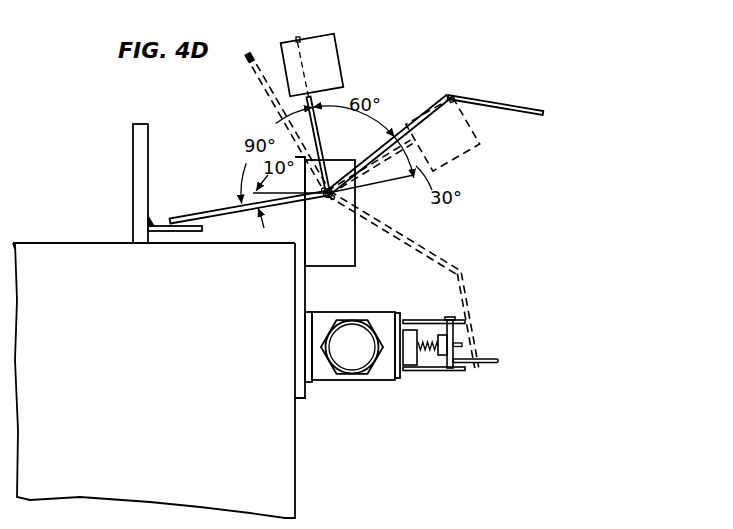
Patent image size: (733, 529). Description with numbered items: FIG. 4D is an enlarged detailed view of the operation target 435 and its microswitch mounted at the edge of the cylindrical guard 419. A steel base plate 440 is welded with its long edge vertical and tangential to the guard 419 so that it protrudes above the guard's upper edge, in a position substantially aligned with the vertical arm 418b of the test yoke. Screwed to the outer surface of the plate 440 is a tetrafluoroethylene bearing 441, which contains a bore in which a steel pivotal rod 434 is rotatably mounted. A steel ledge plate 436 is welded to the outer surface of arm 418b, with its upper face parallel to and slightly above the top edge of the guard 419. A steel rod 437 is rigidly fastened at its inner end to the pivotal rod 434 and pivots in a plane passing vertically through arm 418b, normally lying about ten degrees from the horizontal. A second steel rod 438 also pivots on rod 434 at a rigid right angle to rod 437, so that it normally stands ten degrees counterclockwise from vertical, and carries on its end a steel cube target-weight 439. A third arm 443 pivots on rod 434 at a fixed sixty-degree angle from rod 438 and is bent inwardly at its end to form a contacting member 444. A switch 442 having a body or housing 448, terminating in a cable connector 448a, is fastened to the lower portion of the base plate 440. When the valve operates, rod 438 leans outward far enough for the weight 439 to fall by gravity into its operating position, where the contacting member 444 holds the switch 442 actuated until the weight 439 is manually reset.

The vertical arm of test means yoke 418b is at (140, 155).
The cylindrical guard 419 is at (60, 248).
The pivotal rod 434 is at (328, 199).
The operation target 435 is at (492, 65).
The ledge plate 436 is at (195, 232).
The steel rod 437 is at (250, 64).
The second steel rod 438 is at (319, 137).
The target-weight 439 is at (338, 52).
The base plate 440 is at (298, 278).
The bearing 441 is at (348, 266).
The switch 442 is at (421, 385).
The third arm 443 is at (427, 120).
The contacting member 444 is at (516, 110).
The housing of switch 448 is at (390, 378).
The cable connector 448a is at (352, 364).